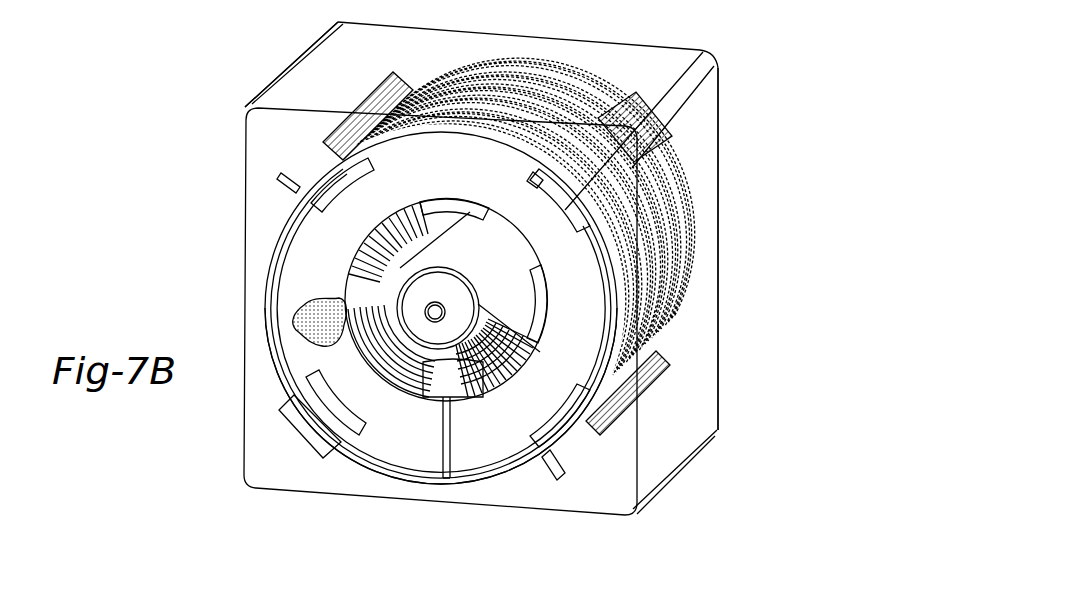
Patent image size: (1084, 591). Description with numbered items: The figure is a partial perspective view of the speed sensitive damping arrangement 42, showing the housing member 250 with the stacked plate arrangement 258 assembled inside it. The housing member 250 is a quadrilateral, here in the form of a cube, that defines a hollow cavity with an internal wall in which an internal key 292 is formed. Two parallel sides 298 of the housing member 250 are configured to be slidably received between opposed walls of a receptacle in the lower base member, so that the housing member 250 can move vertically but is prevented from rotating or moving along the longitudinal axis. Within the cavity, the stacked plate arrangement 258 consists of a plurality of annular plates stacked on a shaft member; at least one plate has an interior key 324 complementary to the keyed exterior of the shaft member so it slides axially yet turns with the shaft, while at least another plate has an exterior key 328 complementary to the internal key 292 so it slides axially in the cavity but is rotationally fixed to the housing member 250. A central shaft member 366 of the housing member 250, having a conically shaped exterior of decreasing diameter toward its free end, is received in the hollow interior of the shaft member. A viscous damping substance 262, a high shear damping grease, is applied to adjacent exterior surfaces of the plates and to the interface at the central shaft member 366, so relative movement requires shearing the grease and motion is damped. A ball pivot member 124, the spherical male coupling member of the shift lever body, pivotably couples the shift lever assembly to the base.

The speed sensitive damping arrangement 42 is at (740, 54).
The ball pivot member 124 is at (293, 0).
The parallel sides 298 is at (693, 160).
The housing member 250 is at (717, 308).
The exterior key 328 is at (282, 178).
The internal key 292 is at (296, 174).
The central shaft member 366 is at (490, 294).
The interior key 324 is at (448, 384).
The viscous damping substance 262 is at (317, 333).
The stacked plate arrangement 258 is at (380, 478).